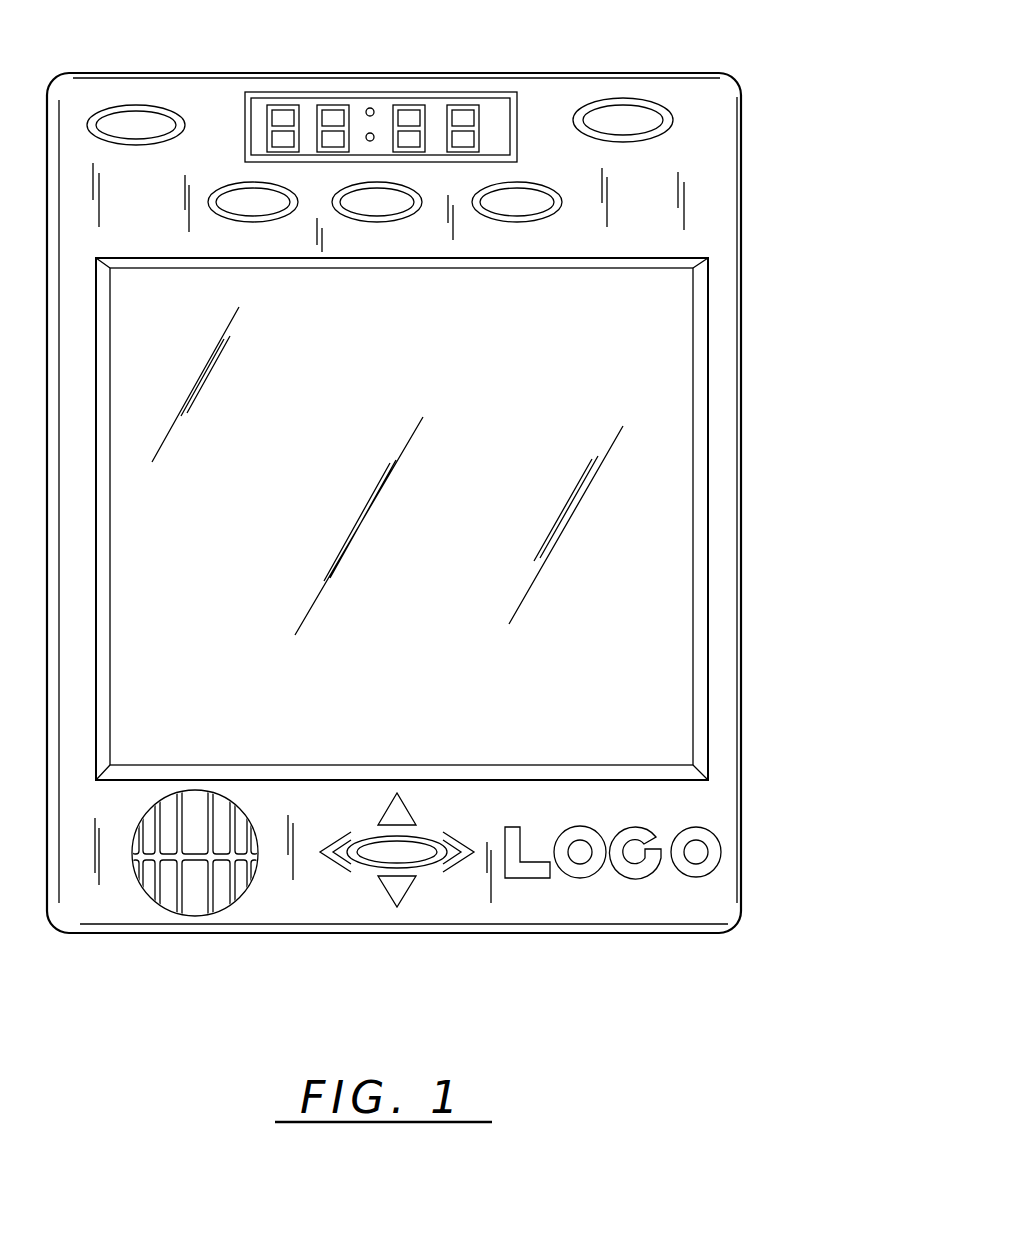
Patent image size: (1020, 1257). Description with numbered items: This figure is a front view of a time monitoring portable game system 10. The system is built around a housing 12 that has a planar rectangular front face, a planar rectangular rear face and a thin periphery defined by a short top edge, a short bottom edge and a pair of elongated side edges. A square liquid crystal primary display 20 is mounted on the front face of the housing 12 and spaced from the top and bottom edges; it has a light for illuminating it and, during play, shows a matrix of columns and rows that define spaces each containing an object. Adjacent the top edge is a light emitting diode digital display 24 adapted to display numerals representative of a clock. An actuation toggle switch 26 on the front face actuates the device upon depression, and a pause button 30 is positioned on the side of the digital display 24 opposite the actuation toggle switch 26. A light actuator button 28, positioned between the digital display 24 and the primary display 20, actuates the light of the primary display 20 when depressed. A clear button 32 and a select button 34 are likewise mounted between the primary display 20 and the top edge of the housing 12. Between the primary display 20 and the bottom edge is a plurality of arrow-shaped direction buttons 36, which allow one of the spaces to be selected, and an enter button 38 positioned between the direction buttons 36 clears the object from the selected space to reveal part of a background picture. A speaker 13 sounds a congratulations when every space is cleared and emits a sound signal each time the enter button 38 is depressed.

The time monitoring portable game system 10 is at (823, 818).
The housing 12 is at (720, 72).
The speaker 13 is at (195, 902).
The liquid crystal primary display 20 is at (670, 328).
The light emitting diode digital display 24 is at (436, 92).
The actuation toggle switch 26 is at (158, 106).
The light actuator button 28 is at (520, 182).
The pause button 30 is at (673, 118).
The clear button 32 is at (222, 185).
The select button 34 is at (353, 182).
The arrow-shaped direction buttons 36 is at (392, 900).
The enter button 38 is at (418, 852).